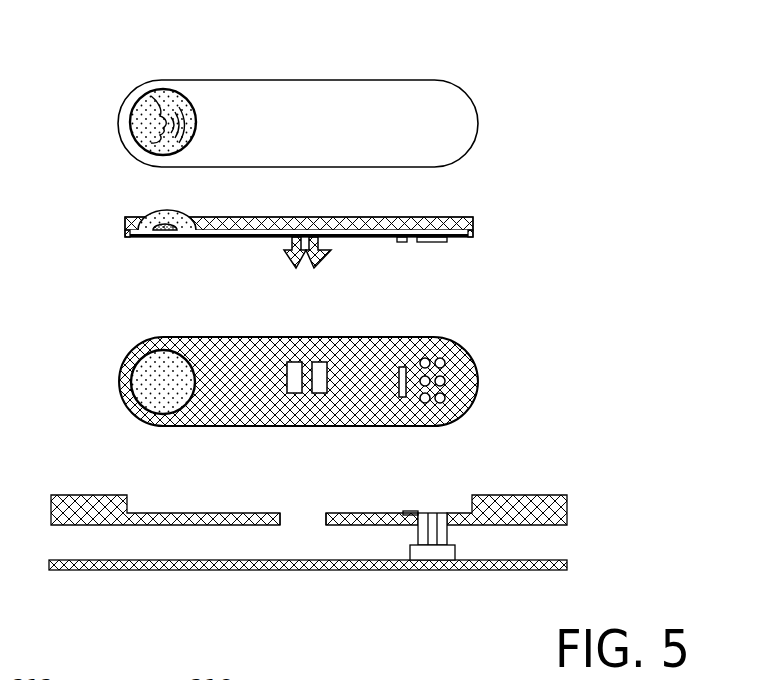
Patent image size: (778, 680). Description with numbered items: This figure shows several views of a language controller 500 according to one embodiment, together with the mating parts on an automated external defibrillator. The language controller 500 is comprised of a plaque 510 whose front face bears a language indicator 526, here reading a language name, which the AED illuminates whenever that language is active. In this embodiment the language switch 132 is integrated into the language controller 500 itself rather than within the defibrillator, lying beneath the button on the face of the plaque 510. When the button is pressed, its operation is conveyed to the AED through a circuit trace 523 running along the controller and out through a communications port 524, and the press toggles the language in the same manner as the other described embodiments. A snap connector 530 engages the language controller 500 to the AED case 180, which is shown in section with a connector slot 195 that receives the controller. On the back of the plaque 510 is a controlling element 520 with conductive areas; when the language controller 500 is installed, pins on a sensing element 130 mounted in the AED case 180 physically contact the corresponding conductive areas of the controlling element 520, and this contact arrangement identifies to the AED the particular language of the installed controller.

The language controller 500 is at (306, 94).
The plaque 510 is at (473, 122).
The language indicator 526 is at (218, 105).
The language switch 132 is at (162, 233).
The circuit trace 523 is at (372, 234).
The snap connector 530 is at (287, 254).
The communications port 524 is at (450, 363).
The controlling element 520 is at (346, 380).
The AED case 180 is at (356, 560).
The connector slot 195 is at (310, 520).
The sensing element 130 is at (433, 556).